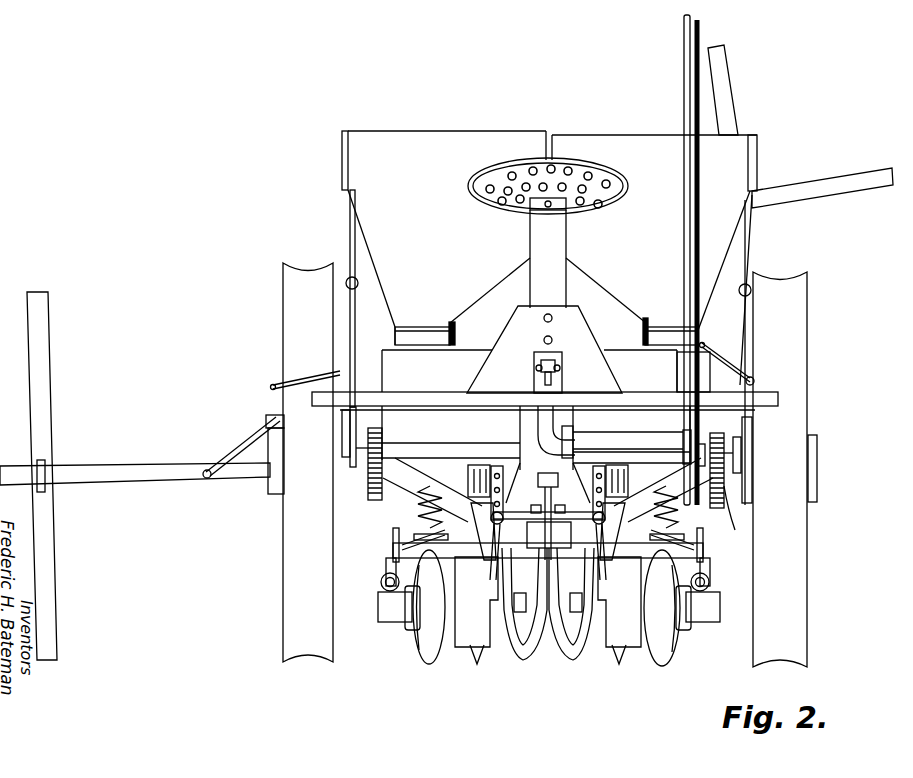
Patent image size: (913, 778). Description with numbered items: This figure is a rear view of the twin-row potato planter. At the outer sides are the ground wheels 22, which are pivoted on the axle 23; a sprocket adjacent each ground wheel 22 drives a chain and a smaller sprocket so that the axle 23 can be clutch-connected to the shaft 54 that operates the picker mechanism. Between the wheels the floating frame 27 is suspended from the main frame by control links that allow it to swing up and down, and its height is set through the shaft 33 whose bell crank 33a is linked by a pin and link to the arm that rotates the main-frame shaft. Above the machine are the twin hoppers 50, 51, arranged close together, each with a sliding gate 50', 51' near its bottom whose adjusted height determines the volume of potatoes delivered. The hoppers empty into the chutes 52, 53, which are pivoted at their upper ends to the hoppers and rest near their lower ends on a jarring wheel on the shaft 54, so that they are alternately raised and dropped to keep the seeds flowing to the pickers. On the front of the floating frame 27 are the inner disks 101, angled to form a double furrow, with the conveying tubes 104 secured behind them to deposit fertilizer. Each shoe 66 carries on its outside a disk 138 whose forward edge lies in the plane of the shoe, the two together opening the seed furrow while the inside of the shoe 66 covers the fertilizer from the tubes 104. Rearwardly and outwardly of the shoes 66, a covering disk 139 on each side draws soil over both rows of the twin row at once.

The ground wheels 22 is at (285, 626).
The axle 23 is at (386, 473).
The floating frame 27 is at (405, 531).
The shaft 33 is at (656, 445).
The bell crank 33a is at (553, 389).
The hopper 50 is at (447, 222).
The sliding gate 50' is at (408, 332).
The hopper 51 is at (654, 221).
The sliding gate 51' is at (649, 332).
The chute 52 is at (453, 331).
The chute 53 is at (641, 323).
The shaft 54 is at (729, 481).
The shoe 66 is at (462, 648).
The inner disks 101 is at (519, 639).
The conveying tubes 104 is at (568, 596).
The disk 138 is at (482, 660).
The covering disk 139 is at (438, 648).